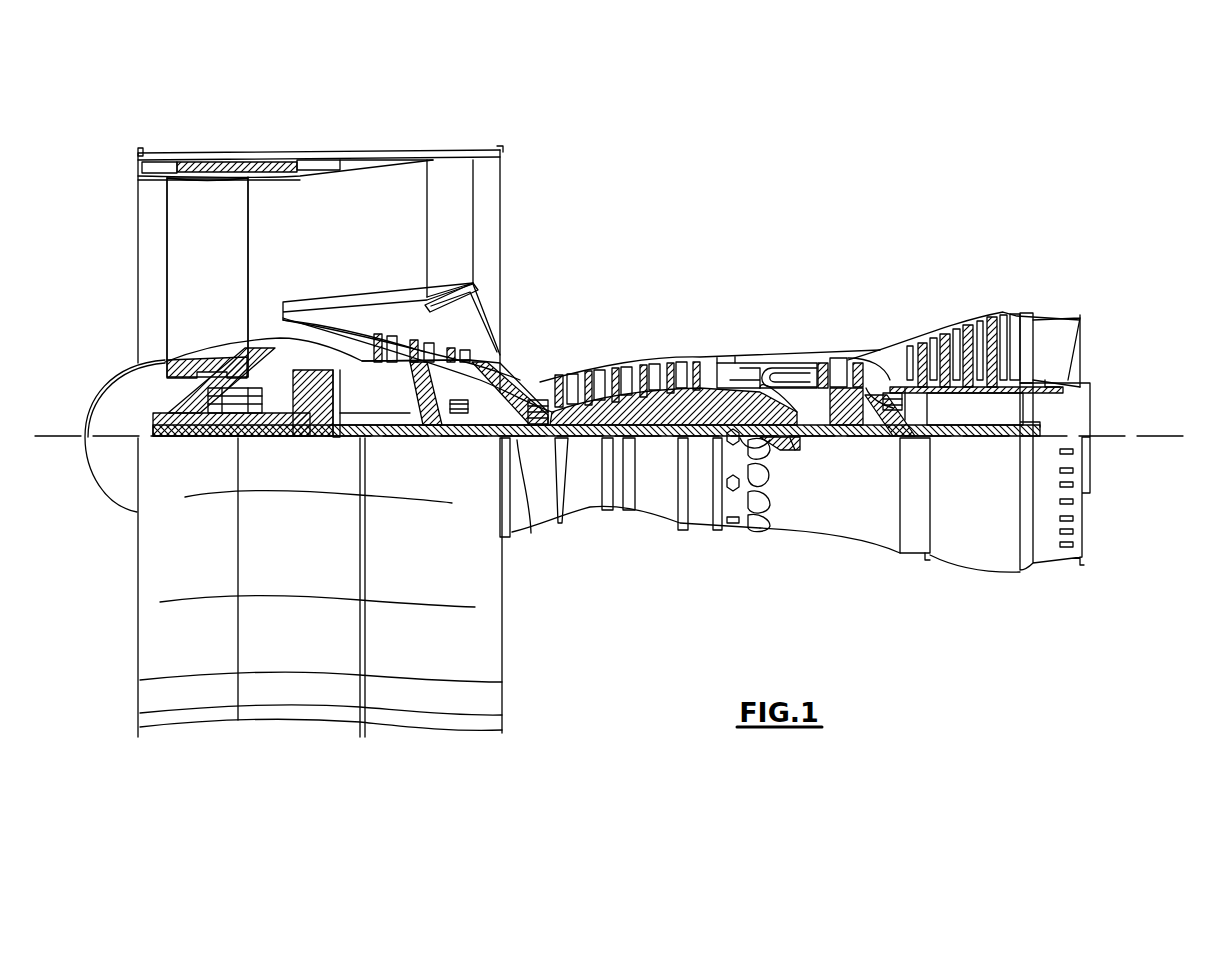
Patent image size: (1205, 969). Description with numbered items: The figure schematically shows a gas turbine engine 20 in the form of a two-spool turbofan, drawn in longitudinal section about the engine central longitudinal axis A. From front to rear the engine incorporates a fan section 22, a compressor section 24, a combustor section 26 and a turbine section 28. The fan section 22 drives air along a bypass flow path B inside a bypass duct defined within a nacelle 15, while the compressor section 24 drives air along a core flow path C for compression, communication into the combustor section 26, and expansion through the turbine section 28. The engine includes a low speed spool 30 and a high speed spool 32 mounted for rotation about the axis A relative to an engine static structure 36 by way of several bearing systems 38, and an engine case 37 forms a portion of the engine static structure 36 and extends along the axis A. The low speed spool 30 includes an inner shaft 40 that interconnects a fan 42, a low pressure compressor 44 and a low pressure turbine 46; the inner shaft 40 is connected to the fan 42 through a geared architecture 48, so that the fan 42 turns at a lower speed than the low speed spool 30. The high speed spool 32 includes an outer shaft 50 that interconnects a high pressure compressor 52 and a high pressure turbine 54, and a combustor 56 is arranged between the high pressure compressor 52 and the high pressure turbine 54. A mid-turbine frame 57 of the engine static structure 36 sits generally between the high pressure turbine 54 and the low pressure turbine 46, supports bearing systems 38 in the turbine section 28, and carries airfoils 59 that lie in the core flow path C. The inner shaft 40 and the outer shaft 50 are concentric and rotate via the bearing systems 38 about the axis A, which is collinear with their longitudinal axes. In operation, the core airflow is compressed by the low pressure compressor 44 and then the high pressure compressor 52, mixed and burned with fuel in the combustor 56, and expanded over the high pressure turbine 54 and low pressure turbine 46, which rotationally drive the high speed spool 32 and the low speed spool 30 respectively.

The gas turbine engine 20 is at (778, 207).
The fan section 22 is at (250, 146).
The nacelle 15 is at (318, 160).
The fan 42 is at (190, 283).
The low pressure compressor 44 is at (415, 355).
The compressor section 24 is at (550, 353).
The high pressure compressor 52 is at (632, 403).
The high speed spool 32 is at (704, 390).
The combustor section 26 is at (773, 332).
The combustor 56 is at (778, 377).
The mid-turbine frame 57 is at (880, 356).
The high pressure turbine 54 is at (841, 356).
The turbine section 28 is at (918, 303).
The low pressure turbine 46 is at (963, 330).
The airfoils 59 is at (890, 395).
The geared architecture 48 is at (327, 418).
The bearing systems 38 is at (458, 420).
The inner shaft 40 is at (527, 525).
The low speed spool 30 is at (657, 442).
The engine static structure 36 is at (699, 520).
The outer shaft 50 is at (786, 439).
The engine case 37 is at (863, 532).
The engine central longitudinal axis A is at (1165, 436).
The bypass flow path B is at (290, 228).
The core flow path C is at (325, 337).